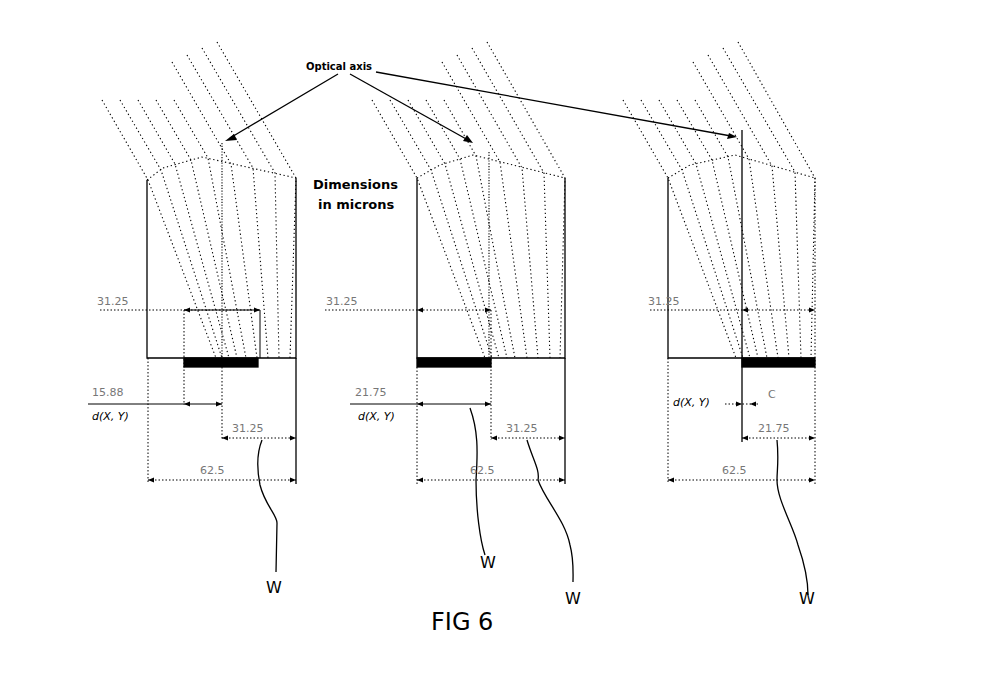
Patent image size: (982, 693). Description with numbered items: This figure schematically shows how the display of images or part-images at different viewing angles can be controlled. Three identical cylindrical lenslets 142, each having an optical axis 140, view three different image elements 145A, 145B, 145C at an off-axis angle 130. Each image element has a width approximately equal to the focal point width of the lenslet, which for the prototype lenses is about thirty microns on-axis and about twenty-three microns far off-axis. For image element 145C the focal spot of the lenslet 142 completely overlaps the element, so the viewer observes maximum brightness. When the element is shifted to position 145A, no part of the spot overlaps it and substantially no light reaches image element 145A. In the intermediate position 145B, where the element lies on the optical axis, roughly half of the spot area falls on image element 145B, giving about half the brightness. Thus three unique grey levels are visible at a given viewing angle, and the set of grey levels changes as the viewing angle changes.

The off-axis angle 130 is at (199, 200).
The lenslet 142 is at (164, 168).
The optical axis 140 is at (222, 242).
The image element 145A is at (452, 367).
The image element 145B is at (187, 367).
The image element 145C is at (777, 367).